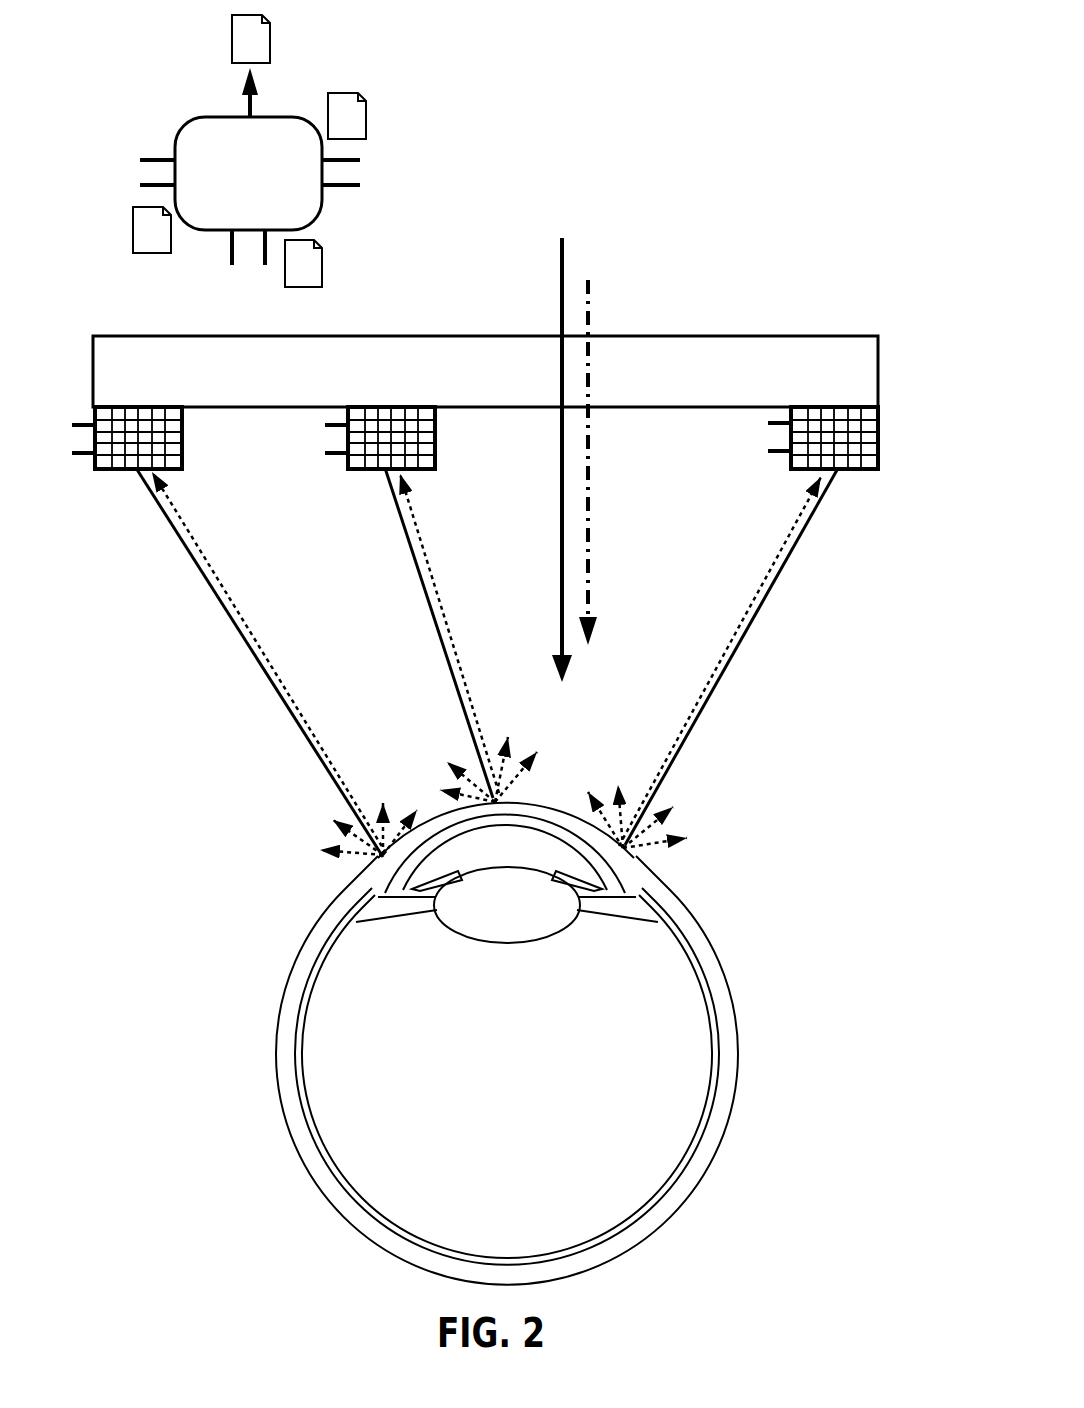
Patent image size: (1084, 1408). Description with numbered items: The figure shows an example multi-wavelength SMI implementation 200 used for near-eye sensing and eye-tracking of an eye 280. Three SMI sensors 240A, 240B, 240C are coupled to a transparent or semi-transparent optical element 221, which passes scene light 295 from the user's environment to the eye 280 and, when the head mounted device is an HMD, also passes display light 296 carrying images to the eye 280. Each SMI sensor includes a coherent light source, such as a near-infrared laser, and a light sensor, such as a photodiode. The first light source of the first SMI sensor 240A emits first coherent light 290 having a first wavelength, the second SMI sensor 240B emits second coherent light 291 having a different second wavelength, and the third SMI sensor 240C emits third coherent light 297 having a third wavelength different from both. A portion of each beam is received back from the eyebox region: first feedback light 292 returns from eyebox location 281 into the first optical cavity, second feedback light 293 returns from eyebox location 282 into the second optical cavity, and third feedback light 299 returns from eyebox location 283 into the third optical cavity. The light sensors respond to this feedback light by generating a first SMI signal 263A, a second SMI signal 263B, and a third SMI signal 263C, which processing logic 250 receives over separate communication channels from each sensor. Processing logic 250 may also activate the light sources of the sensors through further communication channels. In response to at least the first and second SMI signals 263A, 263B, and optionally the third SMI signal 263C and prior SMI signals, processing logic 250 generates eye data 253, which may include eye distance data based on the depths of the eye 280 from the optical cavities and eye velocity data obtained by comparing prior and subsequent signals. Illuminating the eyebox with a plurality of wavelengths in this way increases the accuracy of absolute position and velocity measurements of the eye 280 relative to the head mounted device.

The multi-wavelength SMI implementation 200 is at (511, 212).
The optical element 221 is at (485, 371).
The first SMI sensor 240A is at (182, 446).
The second SMI sensor 240B is at (435, 445).
The third SMI sensor 240C is at (878, 446).
The processing logic 250 is at (250, 181).
The eye data 253 is at (270, 53).
The first SMI signal 263A is at (133, 228).
The second SMI signal 263B is at (322, 265).
The third SMI signal 263C is at (366, 114).
The eye 280 is at (507, 1044).
The eyebox location 281 is at (378, 863).
The eyebox location 282 is at (505, 798).
The eyebox location 283 is at (627, 858).
The first coherent light 290 is at (262, 677).
The second coherent light 291 is at (422, 590).
The first feedback light 292 is at (230, 598).
The second feedback light 293 is at (432, 582).
The scene light 295 is at (561, 446).
The display light 296 is at (589, 448).
The third coherent light 297 is at (742, 633).
The third feedback light 299 is at (760, 577).